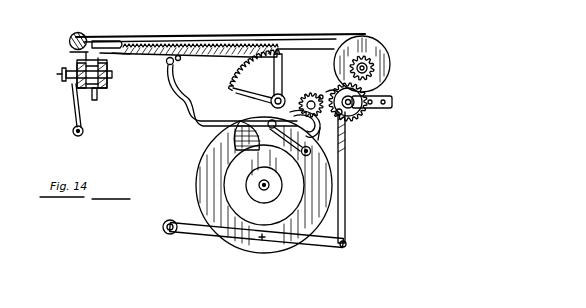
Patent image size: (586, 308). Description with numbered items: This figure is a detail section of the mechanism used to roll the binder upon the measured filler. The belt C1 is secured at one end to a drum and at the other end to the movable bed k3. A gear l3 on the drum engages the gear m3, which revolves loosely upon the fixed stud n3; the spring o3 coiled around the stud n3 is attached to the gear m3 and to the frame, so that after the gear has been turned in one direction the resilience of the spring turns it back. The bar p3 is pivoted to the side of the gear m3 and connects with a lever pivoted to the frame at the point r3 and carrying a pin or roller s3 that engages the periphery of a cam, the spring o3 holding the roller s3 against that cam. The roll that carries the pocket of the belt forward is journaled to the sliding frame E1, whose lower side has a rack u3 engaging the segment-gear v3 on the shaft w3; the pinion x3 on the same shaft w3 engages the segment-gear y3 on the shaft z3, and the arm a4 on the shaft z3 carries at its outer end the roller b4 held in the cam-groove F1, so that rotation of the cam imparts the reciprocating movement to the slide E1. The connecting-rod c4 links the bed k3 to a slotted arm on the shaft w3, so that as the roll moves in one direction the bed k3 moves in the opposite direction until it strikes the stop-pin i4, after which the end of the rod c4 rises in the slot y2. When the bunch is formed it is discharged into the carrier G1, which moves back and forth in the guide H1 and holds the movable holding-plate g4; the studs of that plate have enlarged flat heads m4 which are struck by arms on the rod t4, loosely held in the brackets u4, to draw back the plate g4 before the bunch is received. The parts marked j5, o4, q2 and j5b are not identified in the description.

The belt C1 is at (220, 36).
The sliding frame E1 is at (96, 37).
The shaft z3 is at (312, 151).
The movable holding-plate g4 is at (72, 53).
The carrier G1 is at (99, 74).
The guide H1 is at (107, 84).
The enlarged flat heads m4 is at (78, 73).
The pin j5 is at (104, 64).
The movable bed k3 is at (129, 56).
The stud o4 is at (100, 98).
The brackets u4 is at (66, 105).
The rod t4 is at (85, 131).
The stop-pin i4 is at (178, 65).
The rack u3 is at (200, 55).
The connecting-rod c4 is at (182, 106).
The segment-gear v3 is at (282, 62).
The shaft w3 is at (270, 100).
The pinion x3 is at (312, 92).
The gear m3 is at (338, 76).
The spring o3 is at (322, 95).
The slot y2 is at (305, 124).
The arm a4 is at (292, 140).
The segment-gear y3 is at (325, 128).
The roller b4 is at (247, 135).
The cam-groove F1 is at (264, 185).
The pivot point r3 is at (253, 222).
The pin or roller s3 is at (267, 244).
The joint q2 is at (335, 240).
The bar p3 is at (346, 140).
The fixed stud n3 is at (368, 112).
The drum j5 j5b is at (386, 59).
The gear l3 is at (362, 72).